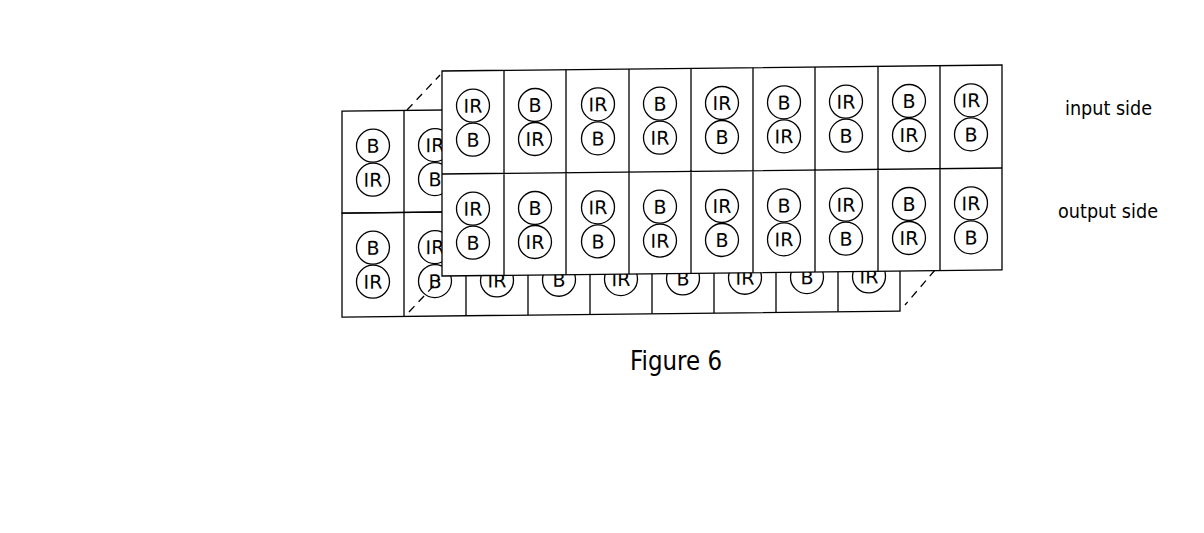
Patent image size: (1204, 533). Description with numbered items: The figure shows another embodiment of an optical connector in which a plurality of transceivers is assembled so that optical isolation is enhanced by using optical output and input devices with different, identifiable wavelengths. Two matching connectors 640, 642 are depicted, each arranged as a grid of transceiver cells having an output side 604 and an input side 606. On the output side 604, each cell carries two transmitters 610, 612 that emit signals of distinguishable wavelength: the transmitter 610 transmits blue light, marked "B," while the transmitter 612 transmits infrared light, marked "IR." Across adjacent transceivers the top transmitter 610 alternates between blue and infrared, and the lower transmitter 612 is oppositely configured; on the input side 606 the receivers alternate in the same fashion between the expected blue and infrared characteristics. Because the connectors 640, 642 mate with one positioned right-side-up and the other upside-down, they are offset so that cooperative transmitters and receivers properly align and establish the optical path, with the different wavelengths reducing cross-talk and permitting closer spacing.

The connector 640 is at (511, 209).
The connector 642 is at (658, 68).
The transmitter 610 is at (358, 145).
The transmitter 612 is at (358, 180).
The output side 604 is at (511, 171).
The input side 606 is at (341, 265).